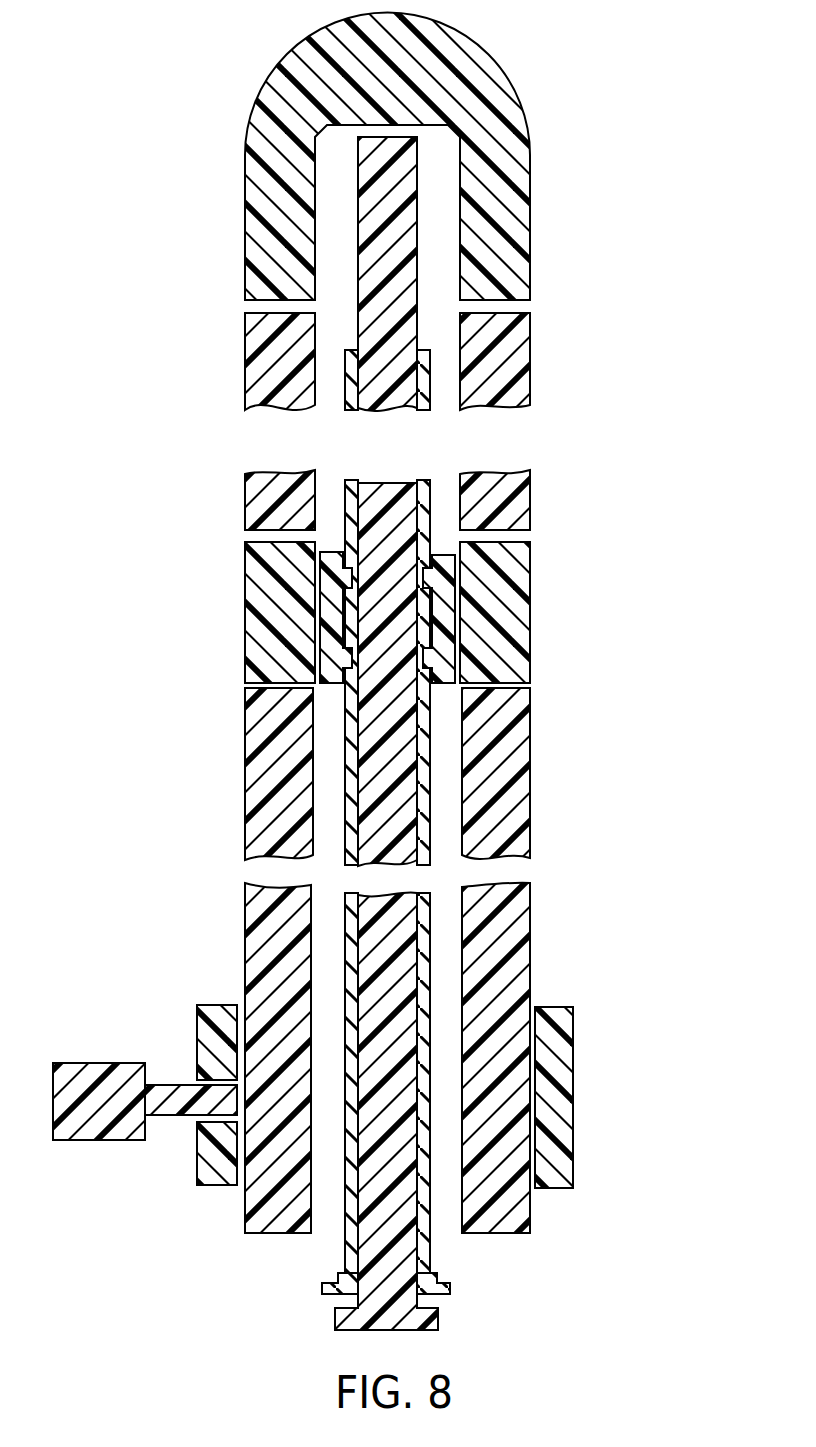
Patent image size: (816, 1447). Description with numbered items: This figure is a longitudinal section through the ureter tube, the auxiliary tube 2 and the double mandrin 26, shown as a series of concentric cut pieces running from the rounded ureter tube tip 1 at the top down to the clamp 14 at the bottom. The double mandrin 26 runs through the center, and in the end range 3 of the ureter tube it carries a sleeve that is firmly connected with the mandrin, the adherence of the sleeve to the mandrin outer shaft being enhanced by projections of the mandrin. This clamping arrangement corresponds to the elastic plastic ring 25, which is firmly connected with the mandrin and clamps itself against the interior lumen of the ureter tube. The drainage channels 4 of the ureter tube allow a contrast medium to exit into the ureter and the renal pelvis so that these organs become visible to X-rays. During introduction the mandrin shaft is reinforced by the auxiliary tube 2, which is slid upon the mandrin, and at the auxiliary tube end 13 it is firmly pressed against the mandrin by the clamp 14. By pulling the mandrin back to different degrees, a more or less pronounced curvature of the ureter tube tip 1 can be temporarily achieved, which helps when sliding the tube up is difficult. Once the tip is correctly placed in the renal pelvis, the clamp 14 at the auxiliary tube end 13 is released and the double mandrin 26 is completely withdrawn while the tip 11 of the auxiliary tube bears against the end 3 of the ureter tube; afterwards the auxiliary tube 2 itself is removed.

The ureter tube tip 1 is at (395, 13).
The auxiliary tube 2 is at (245, 347).
The end of the ureter tube 3 is at (245, 592).
The drainage channels 4 is at (520, 308).
The tip of the auxiliary tube 11 is at (525, 710).
The auxiliary tube end 13 is at (525, 1215).
The clamp 14 is at (158, 1084).
The elastic plastic ring 25 is at (446, 622).
The double mandrin 26 is at (410, 243).